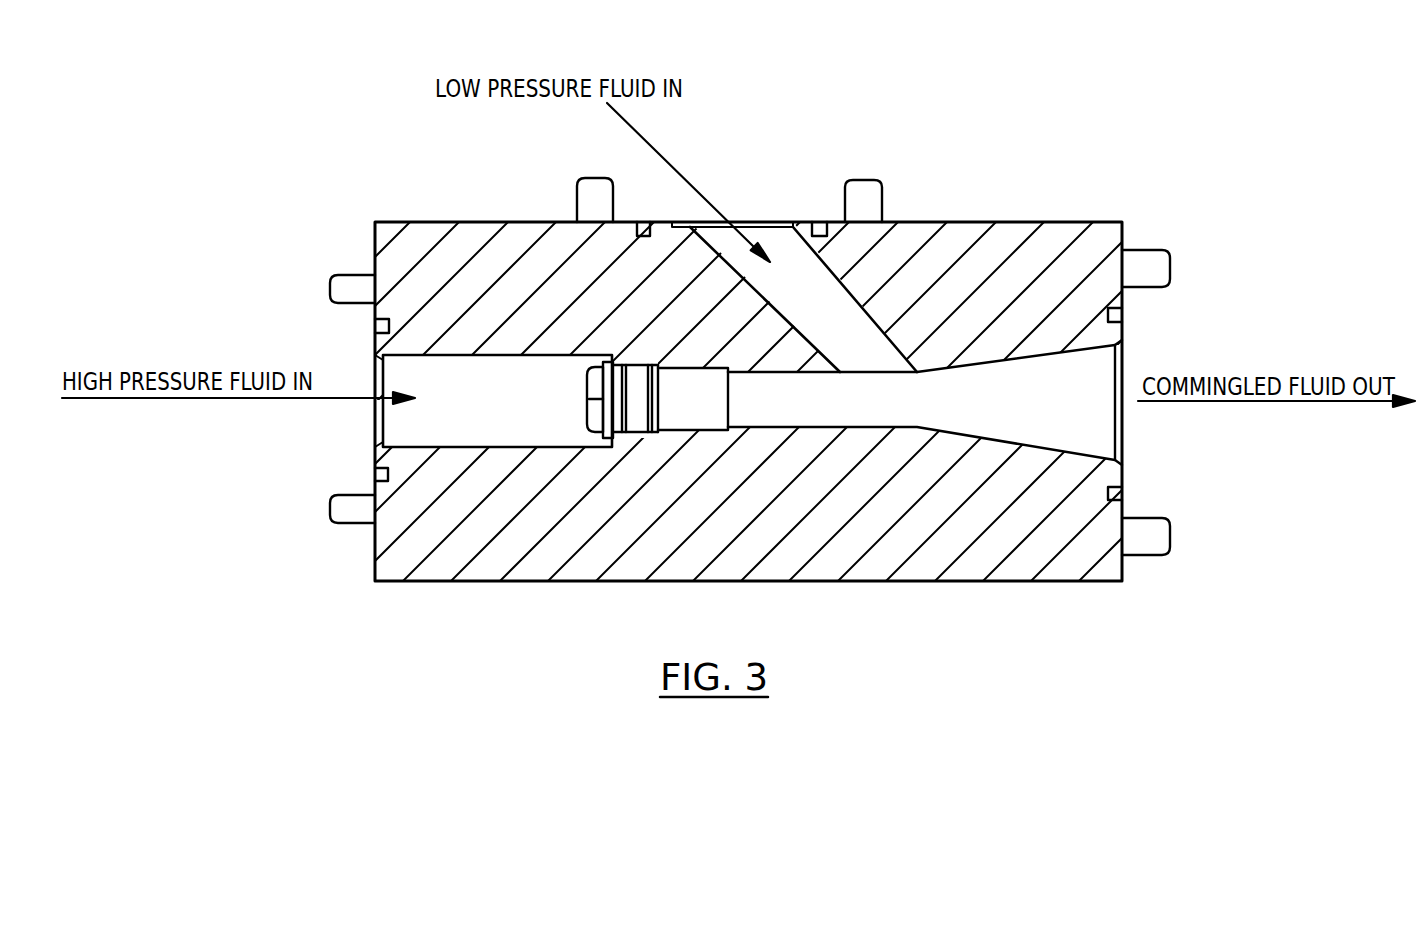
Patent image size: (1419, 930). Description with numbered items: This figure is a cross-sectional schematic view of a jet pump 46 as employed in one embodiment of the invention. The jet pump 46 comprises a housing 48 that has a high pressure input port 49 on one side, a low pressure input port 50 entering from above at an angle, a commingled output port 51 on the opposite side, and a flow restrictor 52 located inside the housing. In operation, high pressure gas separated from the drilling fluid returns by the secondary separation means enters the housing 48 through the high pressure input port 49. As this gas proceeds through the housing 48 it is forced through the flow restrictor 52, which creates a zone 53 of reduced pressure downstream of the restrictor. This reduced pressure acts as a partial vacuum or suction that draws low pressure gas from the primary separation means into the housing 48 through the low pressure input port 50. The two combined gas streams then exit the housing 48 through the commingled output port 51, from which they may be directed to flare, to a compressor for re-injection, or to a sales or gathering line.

The jet pump 46 is at (487, 222).
The housing 48 is at (427, 515).
The high pressure input port 49 is at (378, 375).
The low pressure input port 50 is at (752, 226).
The commingled output port 51 is at (1100, 408).
The flow restrictor 52 is at (600, 388).
The zone of reduced pressure 53 is at (921, 402).